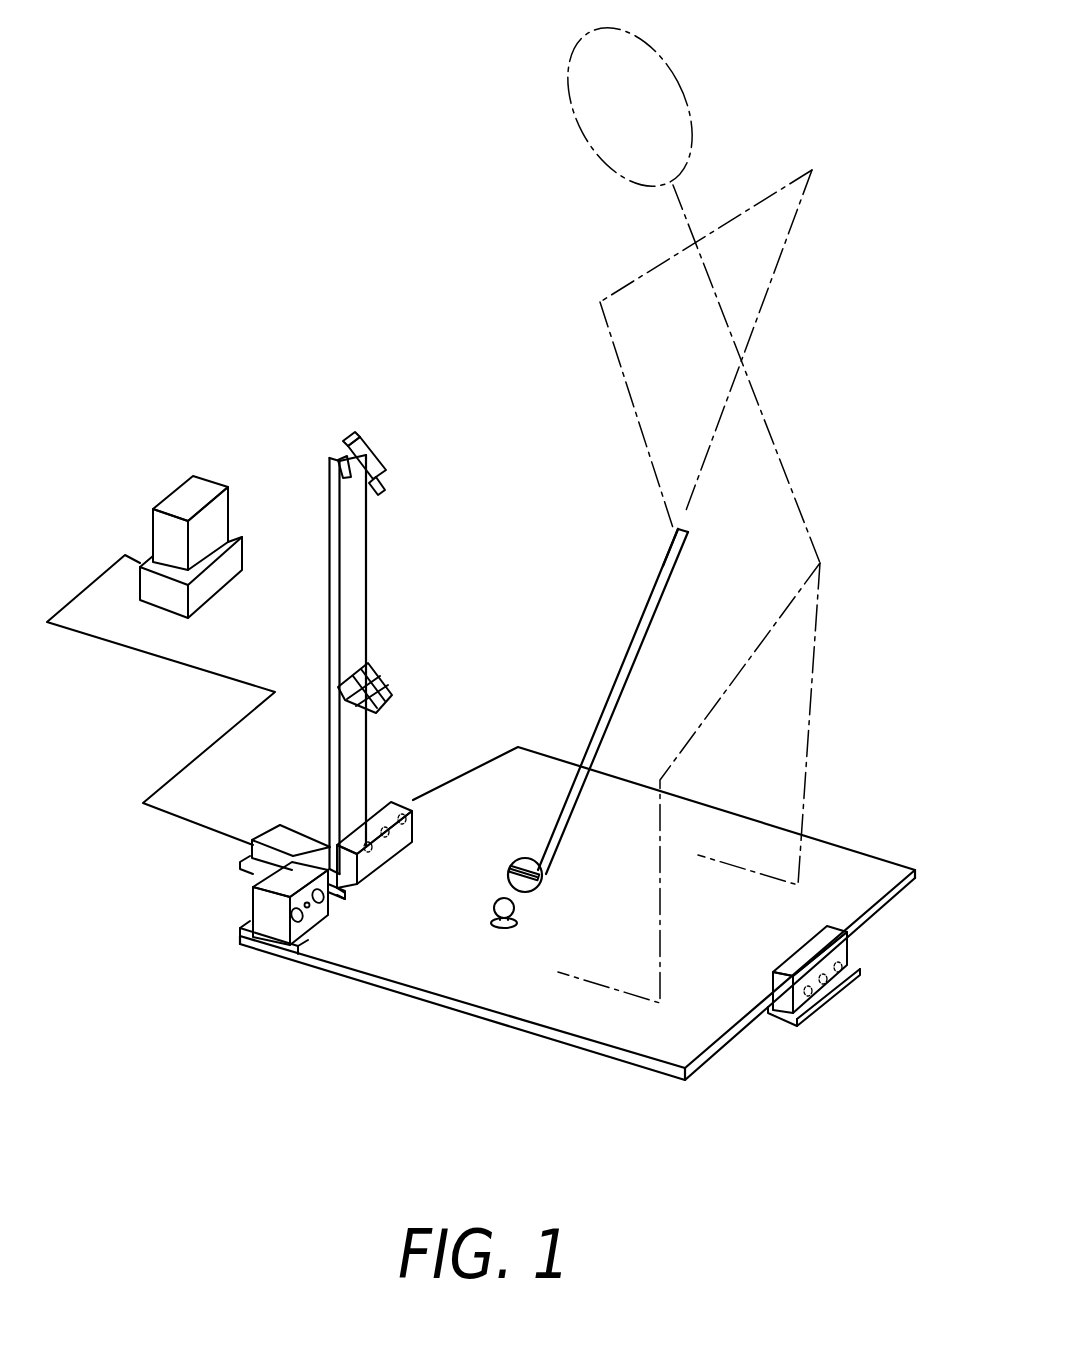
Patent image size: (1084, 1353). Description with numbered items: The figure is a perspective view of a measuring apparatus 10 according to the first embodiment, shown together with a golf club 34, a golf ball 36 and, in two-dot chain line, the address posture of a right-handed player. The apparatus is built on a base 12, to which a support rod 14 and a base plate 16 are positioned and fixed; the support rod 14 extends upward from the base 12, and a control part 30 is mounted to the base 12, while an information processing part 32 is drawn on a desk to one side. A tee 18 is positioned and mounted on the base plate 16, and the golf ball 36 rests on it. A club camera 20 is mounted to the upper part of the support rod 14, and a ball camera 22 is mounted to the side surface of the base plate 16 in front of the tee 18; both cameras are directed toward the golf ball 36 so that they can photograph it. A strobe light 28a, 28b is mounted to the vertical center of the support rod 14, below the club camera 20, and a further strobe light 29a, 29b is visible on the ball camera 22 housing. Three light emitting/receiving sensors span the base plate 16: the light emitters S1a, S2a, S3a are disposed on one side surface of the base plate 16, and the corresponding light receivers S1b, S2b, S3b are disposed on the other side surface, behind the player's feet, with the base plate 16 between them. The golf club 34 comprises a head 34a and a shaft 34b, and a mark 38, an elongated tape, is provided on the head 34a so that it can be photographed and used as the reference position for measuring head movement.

The measuring apparatus 10 is at (197, 293).
The base 12 is at (248, 862).
The support rod 14 is at (360, 555).
The base plate 16 is at (312, 955).
The tee 18 is at (497, 927).
The club camera 20 is at (372, 465).
The ball camera 22 is at (290, 892).
The strobe light 28a is at (372, 680).
The strobe light 28b is at (385, 705).
The strobe light 29a is at (317, 894).
The strobe light 29b is at (297, 916).
The control part 30 is at (272, 842).
The information processing part 32 is at (212, 583).
The golf club 34 is at (632, 638).
The head 34a is at (527, 858).
The shaft 34b is at (650, 597).
The golf ball 36 is at (508, 912).
The mark 38 is at (508, 868).
The light emitter S1a is at (366, 843).
The light emitter S2a is at (380, 820).
The light emitter S3a is at (404, 814).
The light receiver S1b is at (828, 1005).
The light receiver S2b is at (850, 983).
The light receiver S3b is at (850, 943).